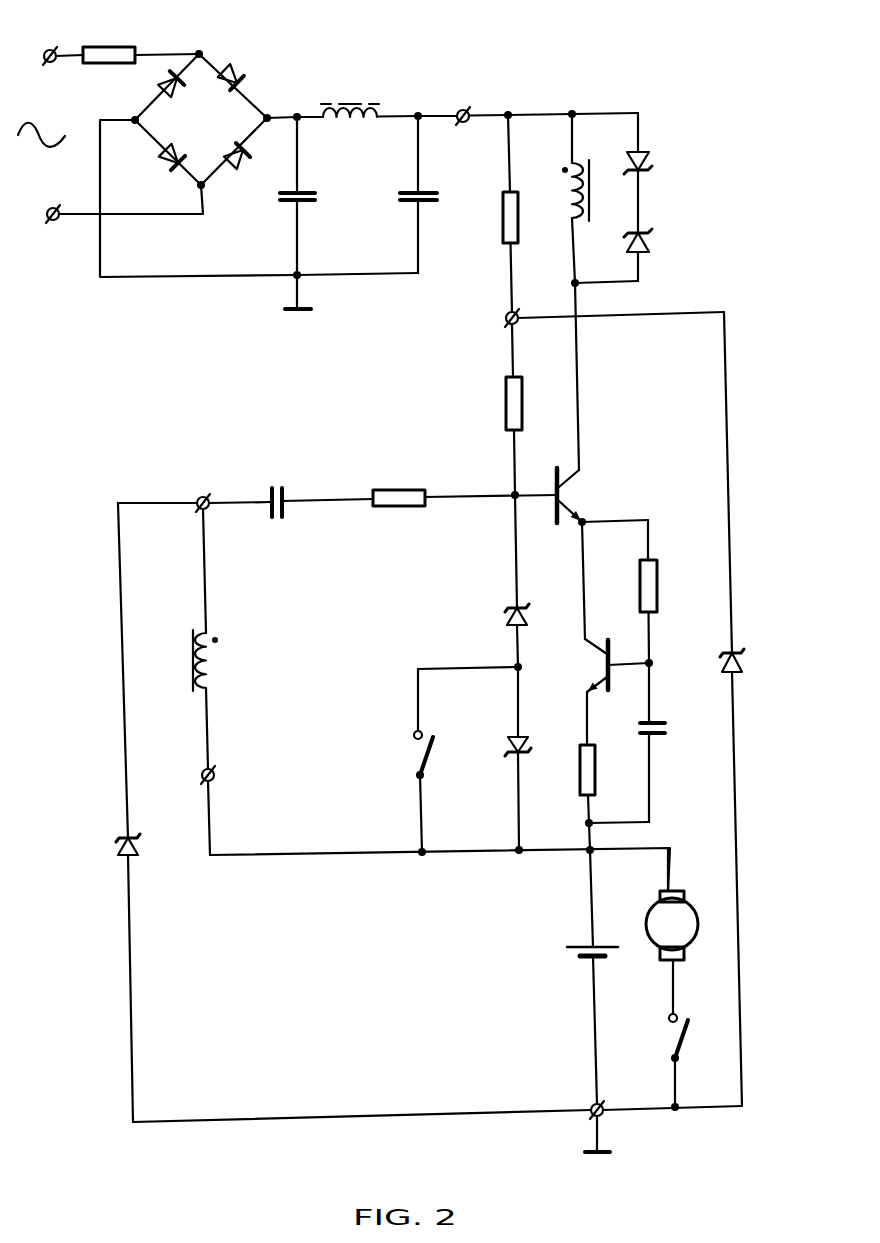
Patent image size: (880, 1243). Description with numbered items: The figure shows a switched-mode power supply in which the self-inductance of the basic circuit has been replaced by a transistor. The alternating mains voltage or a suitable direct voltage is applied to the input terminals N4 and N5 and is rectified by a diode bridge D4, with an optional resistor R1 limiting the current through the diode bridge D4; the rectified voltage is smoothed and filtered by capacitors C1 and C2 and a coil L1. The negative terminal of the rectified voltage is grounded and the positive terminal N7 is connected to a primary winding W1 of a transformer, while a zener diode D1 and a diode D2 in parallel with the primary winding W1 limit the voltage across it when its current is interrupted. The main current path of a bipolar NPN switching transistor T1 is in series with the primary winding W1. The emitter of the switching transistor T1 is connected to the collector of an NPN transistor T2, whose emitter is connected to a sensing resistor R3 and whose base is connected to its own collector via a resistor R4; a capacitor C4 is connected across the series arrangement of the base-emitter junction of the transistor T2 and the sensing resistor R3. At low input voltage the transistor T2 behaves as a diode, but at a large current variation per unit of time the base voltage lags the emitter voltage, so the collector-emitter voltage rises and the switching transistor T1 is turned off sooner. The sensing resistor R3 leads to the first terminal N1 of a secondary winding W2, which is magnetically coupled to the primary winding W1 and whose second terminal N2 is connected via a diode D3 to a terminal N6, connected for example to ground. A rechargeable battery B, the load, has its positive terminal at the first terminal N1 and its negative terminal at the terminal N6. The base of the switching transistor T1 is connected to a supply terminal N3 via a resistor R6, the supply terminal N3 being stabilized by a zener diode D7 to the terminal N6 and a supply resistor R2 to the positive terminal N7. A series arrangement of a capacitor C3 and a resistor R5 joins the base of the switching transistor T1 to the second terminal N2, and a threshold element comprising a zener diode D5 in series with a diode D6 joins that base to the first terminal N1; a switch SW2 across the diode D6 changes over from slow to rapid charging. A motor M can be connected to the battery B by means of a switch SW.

The input terminal N4 is at (50, 48).
The resistor R1 is at (113, 46).
The diode bridge D4 is at (187, 127).
The input terminal N5 is at (53, 222).
The capacitor C1 is at (308, 203).
The capacitor C2 is at (410, 203).
The coil L1 is at (350, 101).
The positive terminal N7 is at (463, 108).
The supply resistor R2 is at (503, 214).
The primary winding W1 is at (590, 198).
The zener diode D1 is at (652, 158).
The diode D2 is at (652, 247).
The supply terminal N3 is at (506, 319).
The resistor R6 is at (506, 407).
The switching transistor T1 is at (573, 493).
The resistor R4 is at (659, 583).
The transistor T2 is at (590, 664).
The sensing resistor R3 is at (596, 772).
The capacitor C4 is at (667, 731).
The zener diode D5 is at (508, 619).
The switch SW2 is at (414, 756).
The diode D6 is at (508, 749).
The zener diode D7 is at (721, 665).
The second terminal N2 is at (204, 496).
The capacitor C3 is at (277, 487).
The resistor R5 is at (399, 490).
The secondary winding W2 is at (191, 661).
The first terminal N1 is at (201, 776).
The diode D3 is at (118, 847).
The rechargeable battery B is at (576, 950).
The terminal N6 is at (594, 1102).
The motor M is at (688, 902).
The switch SW is at (672, 1034).